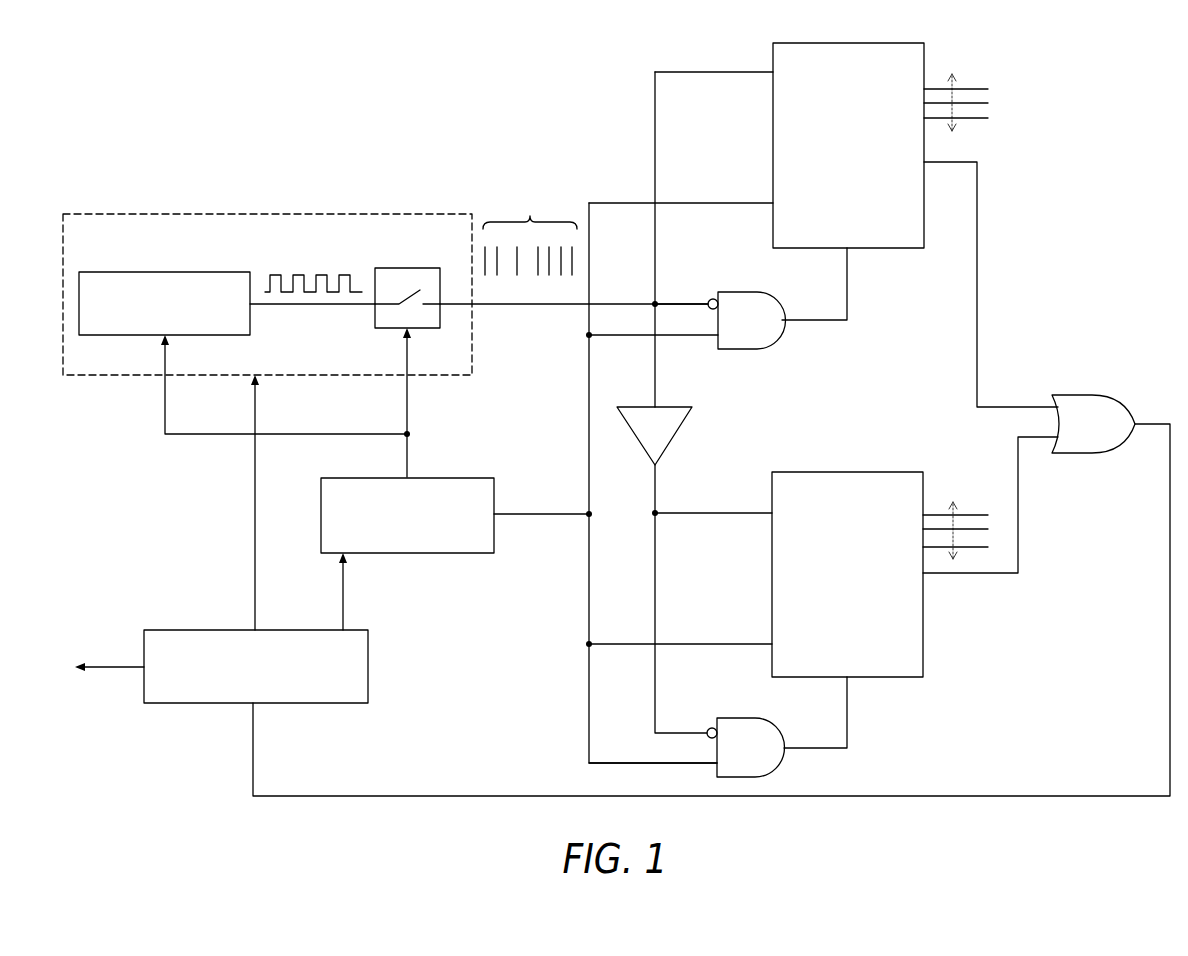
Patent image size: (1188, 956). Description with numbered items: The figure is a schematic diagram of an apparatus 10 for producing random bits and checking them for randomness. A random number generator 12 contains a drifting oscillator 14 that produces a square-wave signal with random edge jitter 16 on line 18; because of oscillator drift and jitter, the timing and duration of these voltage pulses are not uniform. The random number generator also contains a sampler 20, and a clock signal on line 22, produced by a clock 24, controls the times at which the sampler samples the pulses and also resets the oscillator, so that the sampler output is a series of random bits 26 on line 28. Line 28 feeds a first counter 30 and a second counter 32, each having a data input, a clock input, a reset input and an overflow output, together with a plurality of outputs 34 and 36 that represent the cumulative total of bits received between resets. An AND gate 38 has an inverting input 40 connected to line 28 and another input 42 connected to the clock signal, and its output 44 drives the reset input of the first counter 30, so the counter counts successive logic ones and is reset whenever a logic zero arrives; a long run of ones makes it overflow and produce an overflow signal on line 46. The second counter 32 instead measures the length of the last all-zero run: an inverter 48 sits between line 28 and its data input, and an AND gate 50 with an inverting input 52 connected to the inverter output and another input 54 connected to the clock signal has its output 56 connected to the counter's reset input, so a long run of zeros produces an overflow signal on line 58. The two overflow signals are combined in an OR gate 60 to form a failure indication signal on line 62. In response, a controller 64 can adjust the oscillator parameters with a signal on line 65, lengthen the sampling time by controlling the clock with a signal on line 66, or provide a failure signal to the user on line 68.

The apparatus 10 is at (1076, 271).
The random number generator 12 is at (342, 377).
The drifting oscillator 14 is at (190, 335).
The square-wave signal with random edge jitter 16 is at (302, 272).
The line 18 is at (306, 306).
The sampler 20 is at (410, 266).
The line 22 is at (409, 409).
The clock 24 is at (444, 553).
The series of random bits 26 is at (530, 233).
The line 28 is at (527, 306).
The first counter 30 is at (885, 249).
The second counter 32 is at (924, 636).
The outputs 34 is at (952, 72).
The outputs 36 is at (953, 500).
The AND gate 38 is at (762, 349).
The inverting input 40 is at (709, 297).
The input 42 is at (714, 338).
The output 44 is at (850, 309).
The line 46 is at (979, 318).
The inverter 48 is at (674, 440).
The AND gate 50 is at (781, 762).
The inverting input 52 is at (712, 726).
The input 54 is at (717, 765).
The output 56 is at (849, 711).
The line 58 is at (1020, 530).
The OR gate 60 is at (1088, 453).
The line 62 is at (1168, 596).
The controller 64 is at (305, 703).
The line 65 is at (252, 541).
The line 66 is at (345, 603).
The line 68 is at (115, 664).